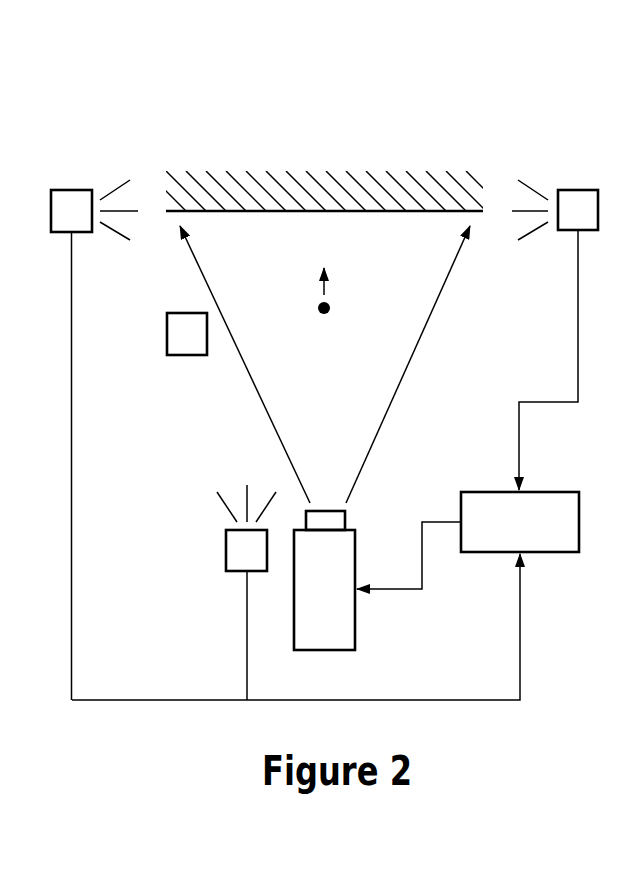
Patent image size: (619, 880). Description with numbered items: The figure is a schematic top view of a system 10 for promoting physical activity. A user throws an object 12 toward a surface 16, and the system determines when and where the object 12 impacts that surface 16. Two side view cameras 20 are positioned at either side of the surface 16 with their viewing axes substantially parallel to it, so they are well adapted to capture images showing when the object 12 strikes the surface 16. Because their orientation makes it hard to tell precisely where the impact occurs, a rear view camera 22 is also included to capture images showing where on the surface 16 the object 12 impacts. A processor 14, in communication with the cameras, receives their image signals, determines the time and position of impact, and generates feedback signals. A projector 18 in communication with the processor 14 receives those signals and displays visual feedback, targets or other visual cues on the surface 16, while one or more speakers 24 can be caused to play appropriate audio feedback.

The system for promoting physical activity 10 is at (246, 148).
The object 12 is at (330, 313).
The processor 14 is at (555, 500).
The surface 16 is at (255, 211).
The projector 18 is at (350, 618).
The side view cameras 20 is at (65, 190).
The rear view camera 22 is at (229, 560).
The speakers 24 is at (181, 355).